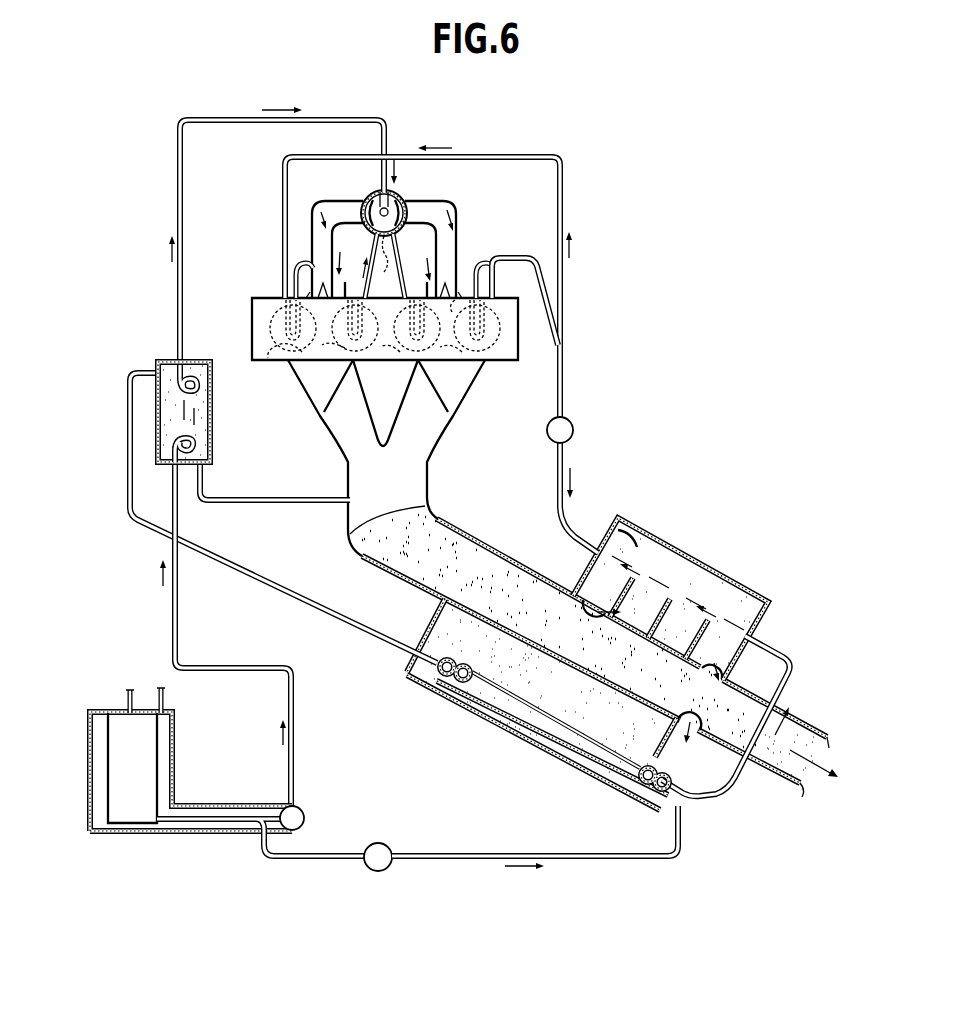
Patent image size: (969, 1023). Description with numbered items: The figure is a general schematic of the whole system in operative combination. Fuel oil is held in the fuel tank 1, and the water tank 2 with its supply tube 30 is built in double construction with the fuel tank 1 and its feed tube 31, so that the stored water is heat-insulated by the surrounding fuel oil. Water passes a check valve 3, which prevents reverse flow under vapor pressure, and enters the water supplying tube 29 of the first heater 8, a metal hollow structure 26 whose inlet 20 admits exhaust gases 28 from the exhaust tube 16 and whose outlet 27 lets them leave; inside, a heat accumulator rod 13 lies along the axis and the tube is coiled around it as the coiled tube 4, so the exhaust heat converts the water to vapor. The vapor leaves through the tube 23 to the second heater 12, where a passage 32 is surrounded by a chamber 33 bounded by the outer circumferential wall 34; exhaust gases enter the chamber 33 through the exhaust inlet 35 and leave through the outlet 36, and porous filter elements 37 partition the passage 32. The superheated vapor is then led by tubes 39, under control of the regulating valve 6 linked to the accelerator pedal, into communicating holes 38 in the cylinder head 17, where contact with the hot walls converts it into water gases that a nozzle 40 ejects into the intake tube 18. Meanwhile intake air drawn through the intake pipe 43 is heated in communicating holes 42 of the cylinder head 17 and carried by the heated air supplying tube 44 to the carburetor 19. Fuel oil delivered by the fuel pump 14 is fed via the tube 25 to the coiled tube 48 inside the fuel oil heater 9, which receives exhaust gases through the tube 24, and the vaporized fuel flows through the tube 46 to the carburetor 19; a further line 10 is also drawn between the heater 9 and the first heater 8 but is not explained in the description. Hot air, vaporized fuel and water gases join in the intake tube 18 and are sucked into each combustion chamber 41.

The fuel tank 1 is at (172, 757).
The water tank 2 is at (100, 762).
The check valve 3 is at (378, 871).
The coiled tube 4 is at (445, 690).
The regulating valve 6 is at (573, 430).
The first heater 8 is at (533, 748).
The fuel oil heater 9 is at (180, 401).
The conduit 10 is at (128, 452).
The second heater 12 is at (663, 592).
The heat accumulator rod 13 is at (600, 755).
The fuel pump 14 is at (300, 810).
The exhaust tube 16 is at (764, 770).
The cylinder head 17 is at (503, 361).
The intake tube 18 is at (313, 240).
The carburetor 19 is at (395, 197).
The inlet 20 is at (500, 650).
The tube 23 is at (712, 797).
The tube 24 is at (278, 499).
The tube 25 is at (178, 182).
The hollow structure 26 is at (490, 720).
The outlet 27 is at (692, 732).
The exhaust gases 28 is at (427, 537).
The water supplying tube 29 is at (447, 860).
The supply tube 30 is at (204, 824).
The feed tube 31 is at (221, 806).
The passage 32 is at (636, 530).
The chamber 33 is at (718, 580).
The outer circumferential wall 34 is at (757, 631).
The exhaust inlet 35 is at (580, 597).
The outlet 36 is at (728, 672).
The filter elements 37 is at (660, 560).
The communicating holes 38 is at (505, 324).
The tubes 39 is at (563, 184).
The nozzle 40 is at (296, 272).
The combustion chamber 41 is at (270, 330).
The communicating holes 42 is at (386, 458).
The intake pipe 43 is at (347, 280).
The heated air supplying tube 44 is at (397, 266).
The tube 46 is at (178, 601).
The coiled tube 48 is at (210, 400).